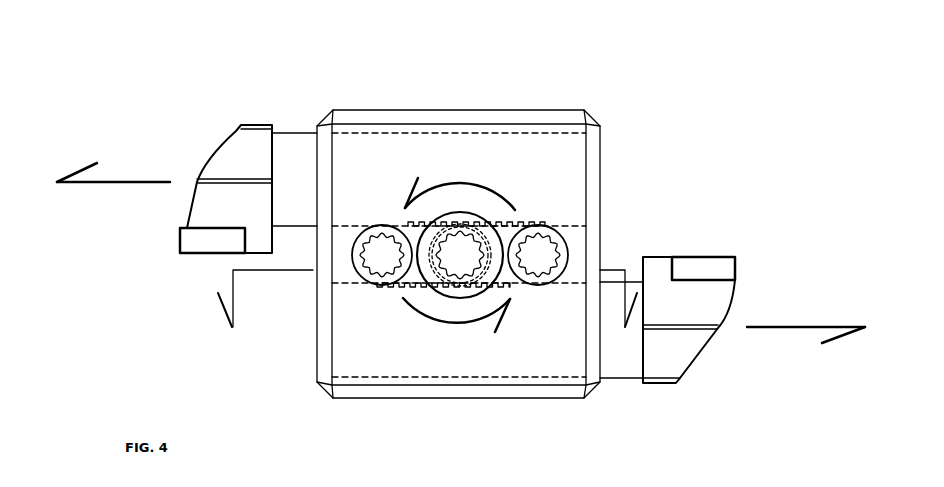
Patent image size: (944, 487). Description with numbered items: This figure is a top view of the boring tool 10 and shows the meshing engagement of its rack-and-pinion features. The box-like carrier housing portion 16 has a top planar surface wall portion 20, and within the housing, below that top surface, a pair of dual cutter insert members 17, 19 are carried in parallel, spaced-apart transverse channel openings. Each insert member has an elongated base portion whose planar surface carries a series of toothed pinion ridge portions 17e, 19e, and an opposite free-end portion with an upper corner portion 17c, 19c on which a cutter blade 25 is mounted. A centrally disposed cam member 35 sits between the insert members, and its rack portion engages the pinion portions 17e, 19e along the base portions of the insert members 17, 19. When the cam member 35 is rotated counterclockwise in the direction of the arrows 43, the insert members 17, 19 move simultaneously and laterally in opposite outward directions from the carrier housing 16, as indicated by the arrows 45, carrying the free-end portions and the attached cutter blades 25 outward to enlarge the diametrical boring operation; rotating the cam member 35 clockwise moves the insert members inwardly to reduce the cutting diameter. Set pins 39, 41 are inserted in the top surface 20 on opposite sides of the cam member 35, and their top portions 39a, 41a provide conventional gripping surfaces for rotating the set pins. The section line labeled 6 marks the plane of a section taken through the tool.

The boring tool 10 is at (546, 95).
The carrier housing portion 16 is at (358, 400).
The top surface wall portion 20 is at (578, 170).
The cutter insert member 17 is at (213, 159).
The upper corner portion 17c is at (207, 208).
The toothed pinion ridge portions 17e is at (517, 222).
The cutter insert member 19 is at (703, 349).
The upper corner portion 19c is at (713, 297).
The toothed pinion ridge portions 19e is at (400, 288).
The cutter blade 25 is at (212, 247).
The cam member 35 is at (460, 248).
The set pin 39 is at (347, 265).
The top portion of set pin 39a is at (382, 245).
The set pin 41 is at (578, 258).
The top portion of set pin 41a is at (543, 248).
The directional arrows 43 is at (475, 187).
The directional arrows 45 is at (108, 181).
The section line 6- 6 is at (427, 298).